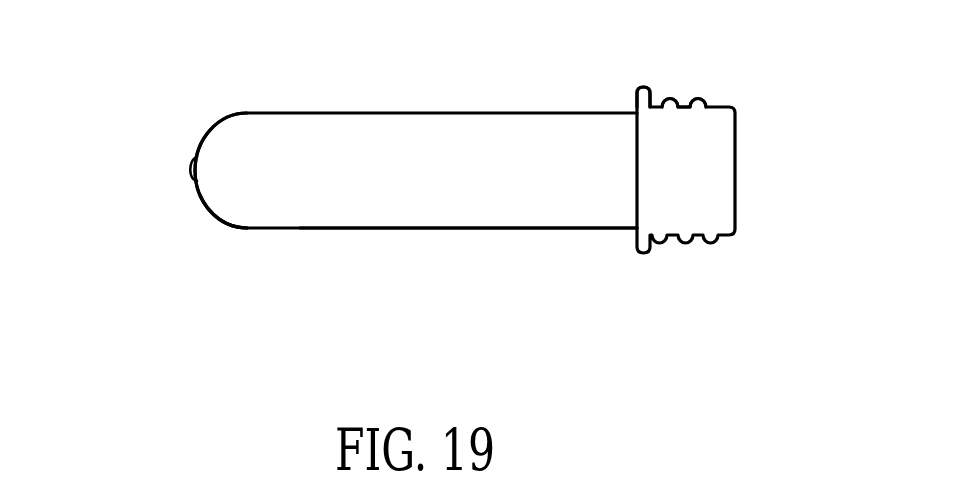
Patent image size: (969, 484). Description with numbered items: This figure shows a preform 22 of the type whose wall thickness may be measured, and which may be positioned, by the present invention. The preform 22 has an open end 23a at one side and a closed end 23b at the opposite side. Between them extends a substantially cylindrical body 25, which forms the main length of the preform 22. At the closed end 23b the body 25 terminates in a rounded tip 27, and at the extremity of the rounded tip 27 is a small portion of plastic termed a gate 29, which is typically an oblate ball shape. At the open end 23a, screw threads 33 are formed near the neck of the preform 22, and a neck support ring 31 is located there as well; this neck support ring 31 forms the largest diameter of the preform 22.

The preform 22 is at (400, 138).
The substantially cylindrical body 25 is at (400, 228).
The gate 29 is at (189, 168).
The closed end 23b is at (195, 198).
The rounded tip 27 is at (212, 210).
The open end 23a is at (740, 173).
The neck support ring 31 is at (636, 102).
The screw threads 33 is at (690, 100).